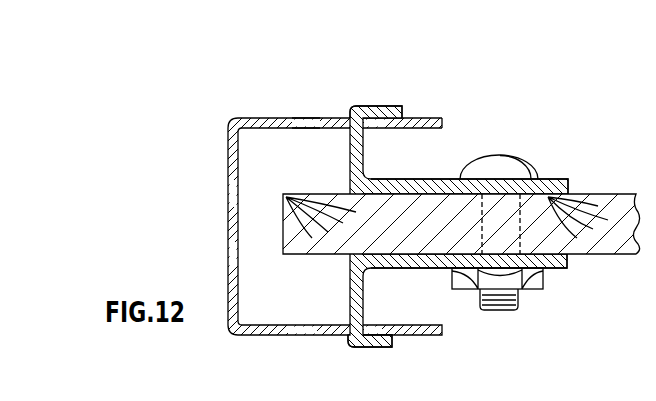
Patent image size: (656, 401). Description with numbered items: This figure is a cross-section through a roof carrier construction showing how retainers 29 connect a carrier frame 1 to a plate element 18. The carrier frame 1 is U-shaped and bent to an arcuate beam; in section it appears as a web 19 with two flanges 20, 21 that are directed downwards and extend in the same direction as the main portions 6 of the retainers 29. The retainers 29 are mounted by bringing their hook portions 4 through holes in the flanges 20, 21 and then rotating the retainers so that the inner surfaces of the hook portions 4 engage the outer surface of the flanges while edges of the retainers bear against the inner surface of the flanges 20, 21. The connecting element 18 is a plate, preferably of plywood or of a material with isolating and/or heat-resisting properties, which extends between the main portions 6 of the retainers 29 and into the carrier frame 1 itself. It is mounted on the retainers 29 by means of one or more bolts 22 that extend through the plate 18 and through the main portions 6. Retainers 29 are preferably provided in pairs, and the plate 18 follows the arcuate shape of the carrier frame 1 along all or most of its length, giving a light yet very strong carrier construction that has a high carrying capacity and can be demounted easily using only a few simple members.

The carrier frame 1 is at (310, 112).
The hook portions 4 is at (388, 100).
The main portions 6 is at (556, 183).
The connecting element 18 is at (283, 206).
The web 19 is at (228, 243).
The flange 20 is at (263, 117).
The flange 21 is at (262, 337).
The bolts 22 is at (506, 150).
The retainers 29 is at (452, 174).